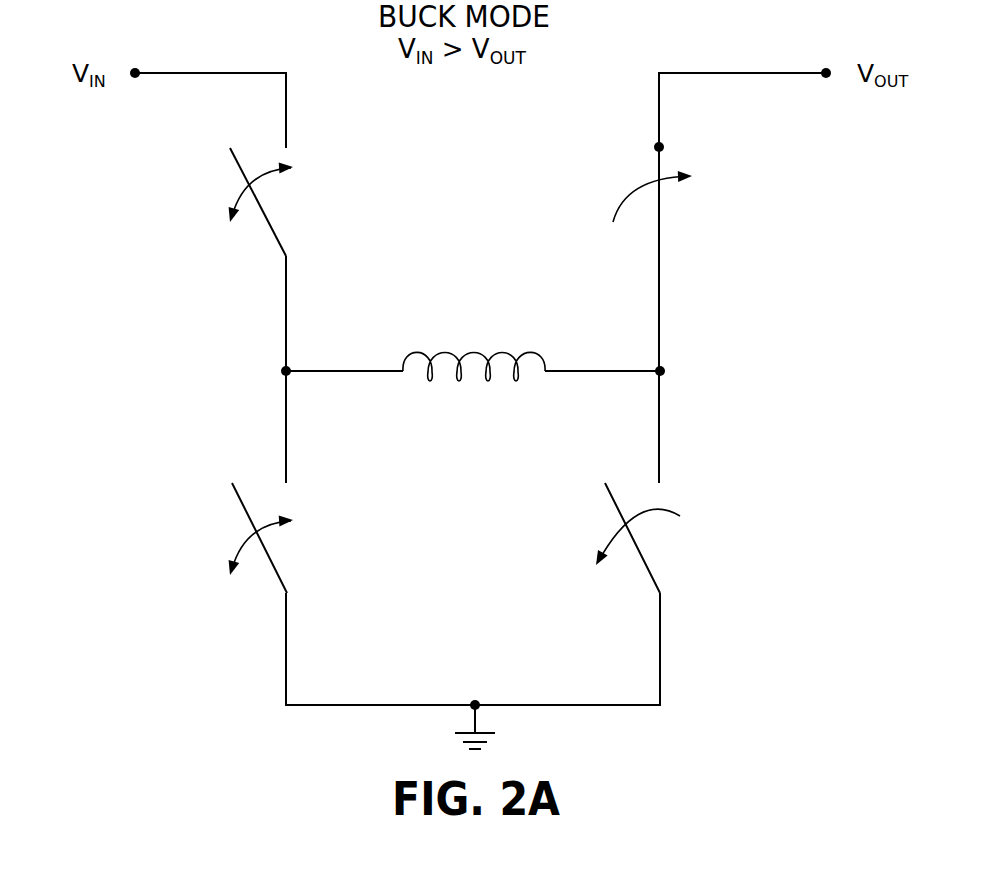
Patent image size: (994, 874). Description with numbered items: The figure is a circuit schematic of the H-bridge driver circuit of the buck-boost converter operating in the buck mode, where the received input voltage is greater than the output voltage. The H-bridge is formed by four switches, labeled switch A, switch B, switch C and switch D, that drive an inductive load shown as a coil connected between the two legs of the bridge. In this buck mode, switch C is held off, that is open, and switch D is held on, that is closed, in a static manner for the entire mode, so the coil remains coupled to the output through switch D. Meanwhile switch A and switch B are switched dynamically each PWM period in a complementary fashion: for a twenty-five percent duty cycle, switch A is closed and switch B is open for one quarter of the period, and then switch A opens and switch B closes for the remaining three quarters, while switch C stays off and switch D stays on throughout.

The switch A is at (185, 202).
The switch B is at (182, 538).
The switch C is at (717, 538).
The switch D is at (715, 204).